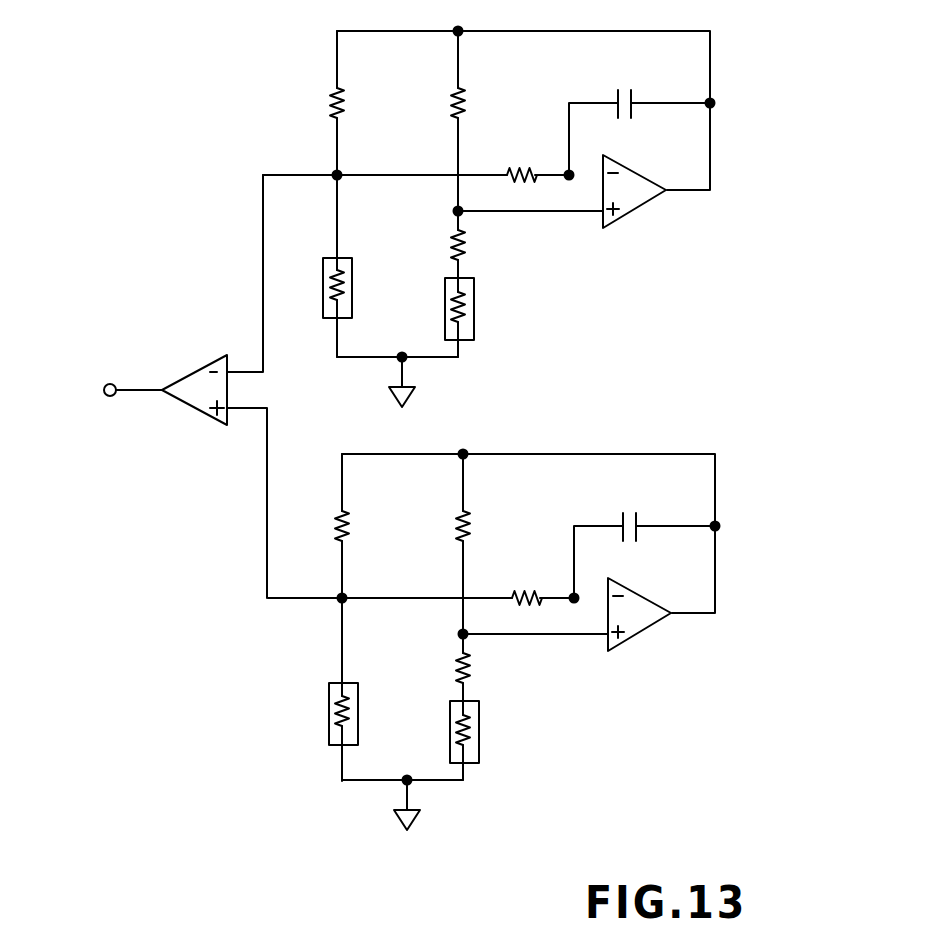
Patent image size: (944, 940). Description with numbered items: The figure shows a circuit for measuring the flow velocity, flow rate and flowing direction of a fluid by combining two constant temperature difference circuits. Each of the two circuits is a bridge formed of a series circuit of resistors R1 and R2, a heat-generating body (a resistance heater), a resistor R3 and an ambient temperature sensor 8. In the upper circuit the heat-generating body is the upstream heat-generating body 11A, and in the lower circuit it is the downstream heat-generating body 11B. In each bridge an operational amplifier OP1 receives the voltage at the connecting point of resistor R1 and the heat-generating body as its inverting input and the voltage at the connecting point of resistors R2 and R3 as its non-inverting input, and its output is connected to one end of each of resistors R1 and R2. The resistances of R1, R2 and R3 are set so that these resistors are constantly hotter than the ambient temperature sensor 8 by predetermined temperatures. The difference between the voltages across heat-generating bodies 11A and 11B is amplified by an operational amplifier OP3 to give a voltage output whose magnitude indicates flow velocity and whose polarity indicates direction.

The upstream heat-generating body 11A is at (352, 280).
The downstream heat-generating body 11B is at (329, 722).
The ambient temperature sensor 8 is at (474, 305).
The operational amplifier OP1 is at (632, 212).
The operational amplifier OP3 is at (200, 419).
The resistor R1 is at (353, 314).
The resistor R2 is at (474, 332).
The resistor R3 is at (474, 456).